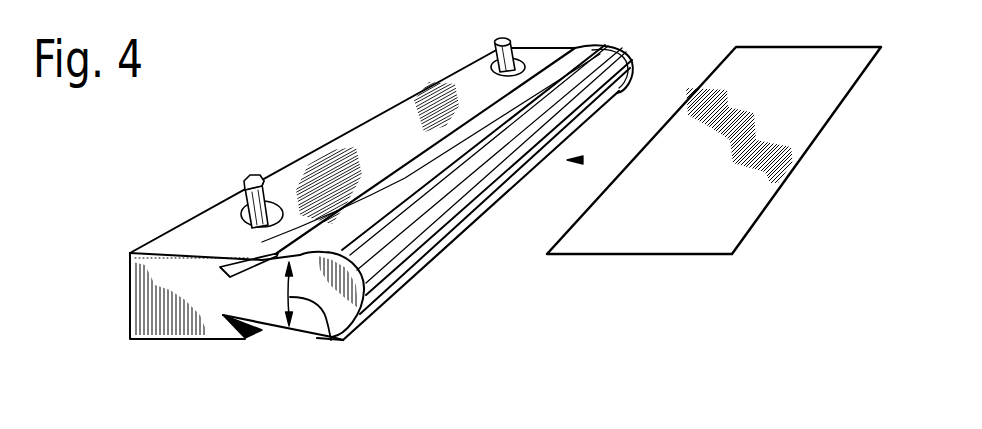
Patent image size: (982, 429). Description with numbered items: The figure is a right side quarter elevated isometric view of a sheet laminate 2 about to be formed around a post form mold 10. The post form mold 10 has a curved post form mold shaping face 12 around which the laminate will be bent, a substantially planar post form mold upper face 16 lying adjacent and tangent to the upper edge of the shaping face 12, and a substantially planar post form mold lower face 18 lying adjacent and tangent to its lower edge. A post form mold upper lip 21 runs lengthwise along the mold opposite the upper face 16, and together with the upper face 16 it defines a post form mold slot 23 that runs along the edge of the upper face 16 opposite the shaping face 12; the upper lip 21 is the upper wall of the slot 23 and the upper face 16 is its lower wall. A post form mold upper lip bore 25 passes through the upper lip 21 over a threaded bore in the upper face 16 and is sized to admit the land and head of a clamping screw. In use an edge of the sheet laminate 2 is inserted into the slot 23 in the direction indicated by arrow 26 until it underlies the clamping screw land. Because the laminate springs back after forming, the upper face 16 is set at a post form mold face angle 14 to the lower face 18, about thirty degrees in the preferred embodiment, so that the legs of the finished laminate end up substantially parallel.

The post form mold 10 is at (96, 132).
The post form mold upper face 16 is at (420, 164).
The post form mold shaping face 12 is at (390, 255).
The post form mold upper lip bore 25 is at (273, 207).
The post form mold upper lip 21 is at (247, 258).
The post form mold slot 23 is at (247, 258).
The post form mold lower face 18 is at (288, 324).
The post form mold face angle 14 is at (327, 337).
The arrow 26 is at (582, 160).
The sheet laminate 2 is at (776, 190).